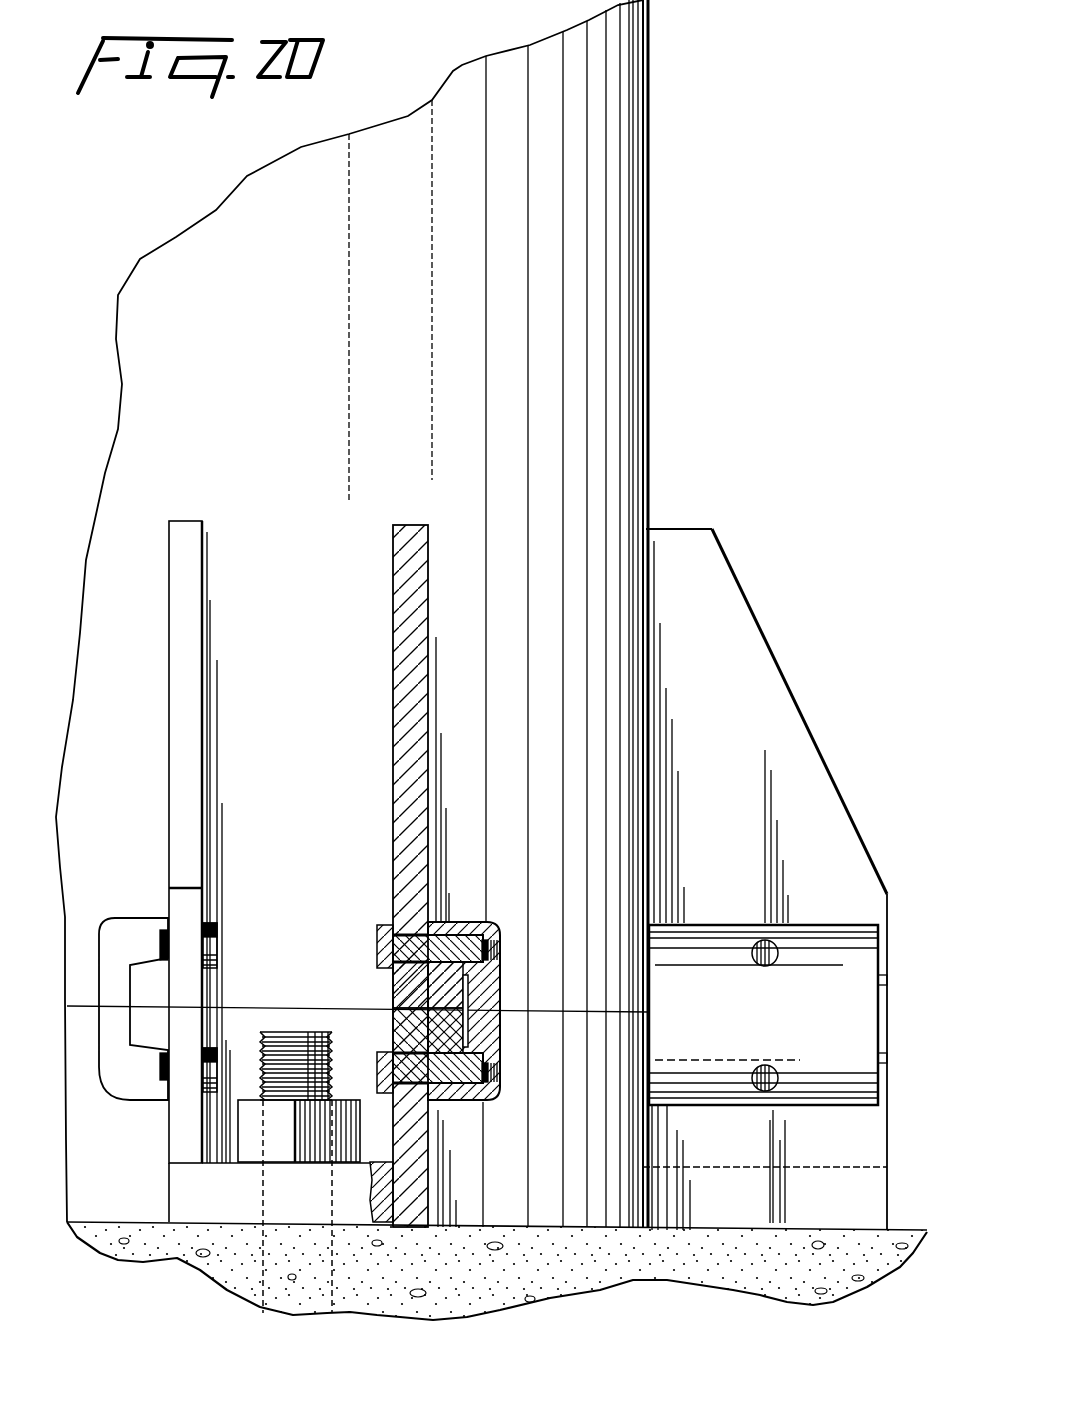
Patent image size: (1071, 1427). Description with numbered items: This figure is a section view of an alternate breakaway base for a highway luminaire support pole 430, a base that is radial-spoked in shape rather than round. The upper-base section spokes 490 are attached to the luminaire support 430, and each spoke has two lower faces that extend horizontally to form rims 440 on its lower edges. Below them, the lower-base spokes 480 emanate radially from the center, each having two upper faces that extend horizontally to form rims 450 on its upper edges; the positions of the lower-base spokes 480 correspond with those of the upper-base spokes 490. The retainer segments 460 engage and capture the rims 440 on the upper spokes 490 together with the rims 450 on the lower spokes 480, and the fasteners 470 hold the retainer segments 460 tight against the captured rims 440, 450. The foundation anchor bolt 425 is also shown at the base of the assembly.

The foundation anchor bolt 425 is at (258, 1264).
The highway luminaire support pole 430 is at (607, 240).
The rims on upper-base section spokes 440 is at (148, 982).
The rims on lower-base section spokes 450 is at (162, 1030).
The retainer segments 460 is at (486, 920).
The fasteners 470 is at (377, 947).
The lower-base spokes 480 is at (178, 1180).
The upper-base spokes 490 is at (394, 562).